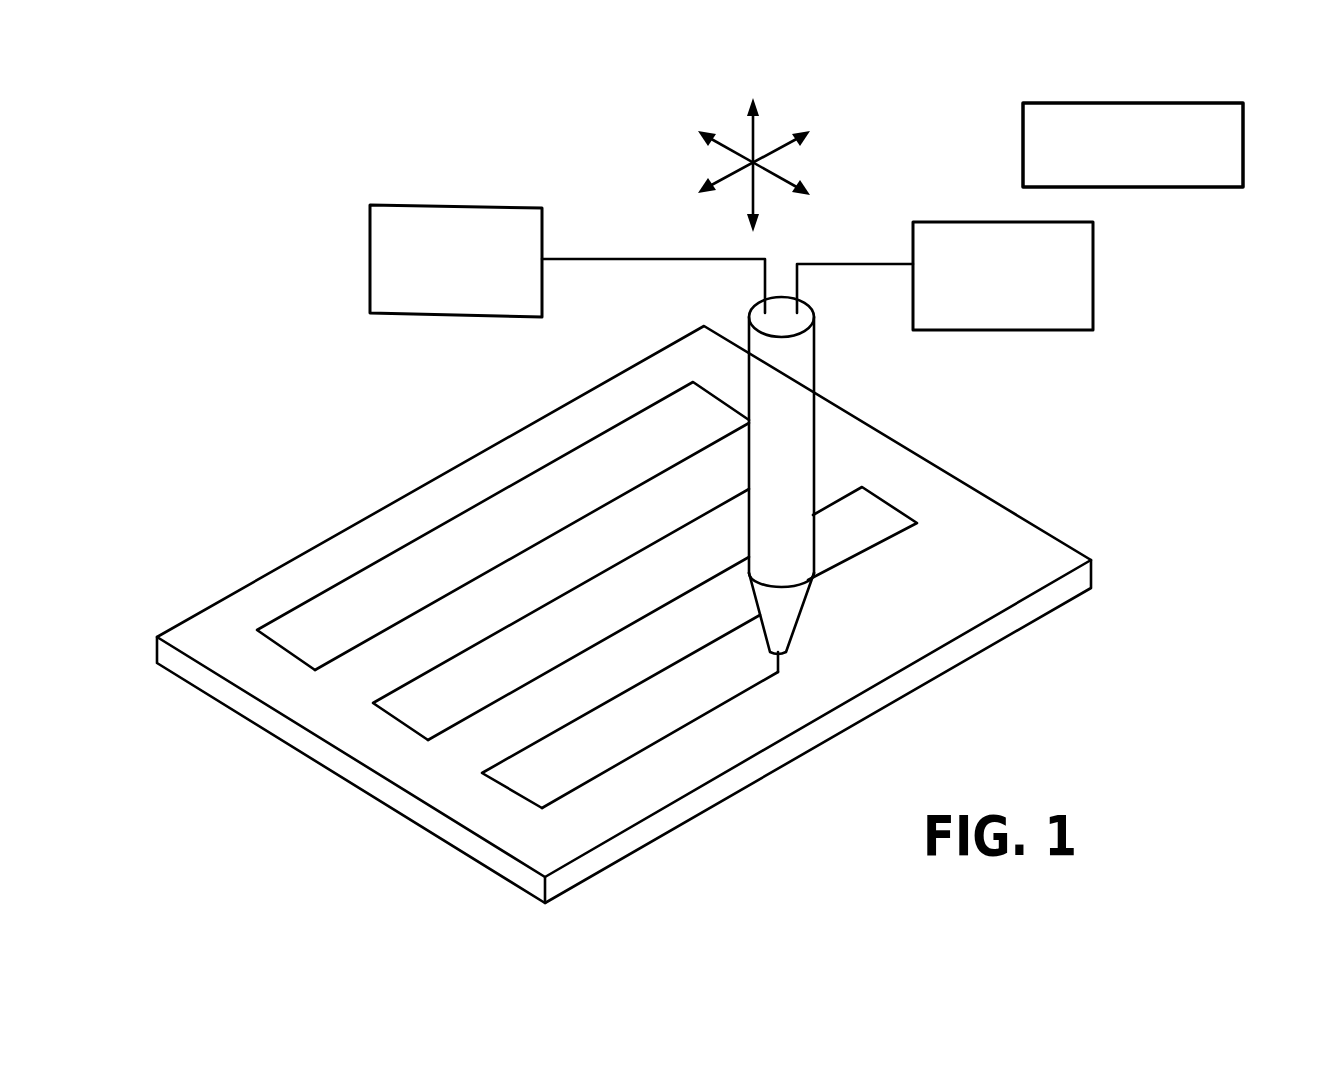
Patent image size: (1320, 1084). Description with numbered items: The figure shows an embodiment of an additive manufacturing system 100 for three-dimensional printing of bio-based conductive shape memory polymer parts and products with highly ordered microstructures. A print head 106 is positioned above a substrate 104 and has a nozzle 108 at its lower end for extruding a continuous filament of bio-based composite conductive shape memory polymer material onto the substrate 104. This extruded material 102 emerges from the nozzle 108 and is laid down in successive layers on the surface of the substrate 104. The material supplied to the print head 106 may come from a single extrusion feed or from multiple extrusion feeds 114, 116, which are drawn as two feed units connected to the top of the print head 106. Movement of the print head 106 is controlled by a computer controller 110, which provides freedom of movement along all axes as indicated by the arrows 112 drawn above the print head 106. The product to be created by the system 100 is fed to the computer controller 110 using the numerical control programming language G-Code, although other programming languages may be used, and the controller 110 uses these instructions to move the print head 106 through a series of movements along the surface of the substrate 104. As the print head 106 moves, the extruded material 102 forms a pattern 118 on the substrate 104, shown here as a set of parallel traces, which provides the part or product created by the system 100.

The additive manufacturing system 100 is at (480, 144).
The extruded material 102 is at (782, 668).
The substrate 104 is at (1000, 588).
The print head 106 is at (798, 383).
The nozzle 108 is at (803, 624).
The computer controller 110 is at (1023, 150).
The arrows 112 is at (756, 142).
The extrusion feed 114 is at (370, 246).
The extrusion feed 116 is at (1093, 280).
The pattern 118 is at (405, 545).